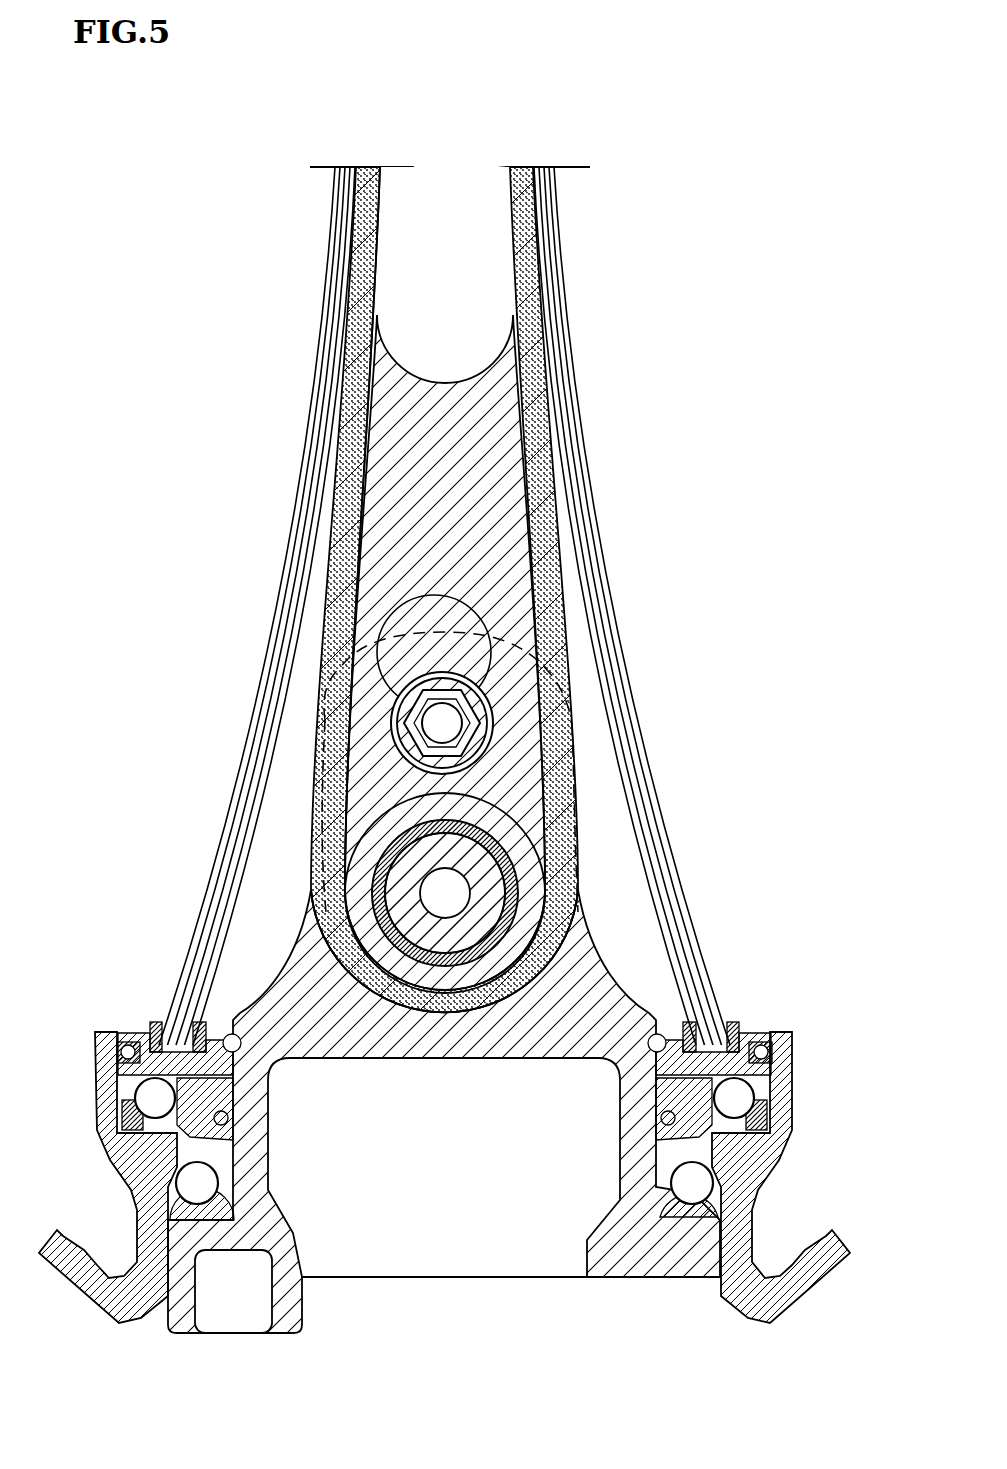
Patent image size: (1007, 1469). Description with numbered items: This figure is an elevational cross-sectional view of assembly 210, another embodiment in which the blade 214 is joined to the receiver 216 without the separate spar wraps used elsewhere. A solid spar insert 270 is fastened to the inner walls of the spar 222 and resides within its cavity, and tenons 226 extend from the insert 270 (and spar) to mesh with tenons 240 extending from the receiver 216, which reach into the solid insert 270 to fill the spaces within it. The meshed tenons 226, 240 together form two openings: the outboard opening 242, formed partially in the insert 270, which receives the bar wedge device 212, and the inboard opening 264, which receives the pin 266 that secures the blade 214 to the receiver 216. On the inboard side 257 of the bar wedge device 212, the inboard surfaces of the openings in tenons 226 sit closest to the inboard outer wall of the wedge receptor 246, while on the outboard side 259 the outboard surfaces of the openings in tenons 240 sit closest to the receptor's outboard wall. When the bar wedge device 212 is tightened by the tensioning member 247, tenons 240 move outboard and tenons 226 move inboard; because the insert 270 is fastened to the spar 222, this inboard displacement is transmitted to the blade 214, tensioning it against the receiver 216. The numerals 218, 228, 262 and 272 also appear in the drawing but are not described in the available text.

The assembly 210 is at (680, 313).
The bar wedge device 212 is at (448, 664).
The blade 214 is at (310, 395).
The receiver 216 is at (628, 1280).
The bearing housing 218 is at (752, 942).
The spar 222 is at (522, 303).
The tenons 226 is at (373, 1013).
The yoke body 228 is at (338, 1000).
The tenons 240 is at (587, 840).
The outboard opening 242 is at (492, 705).
The wedge receptor 246 is at (450, 778).
The tensioning member 247 is at (362, 774).
The inboard side 257 is at (458, 778).
The outboard side 259 is at (434, 600).
The bolt 262 is at (492, 928).
The inboard opening 264 is at (521, 862).
The pin 266 is at (400, 895).
The spar insert 270 is at (535, 498).
The elastomeric layer 272 is at (522, 258).